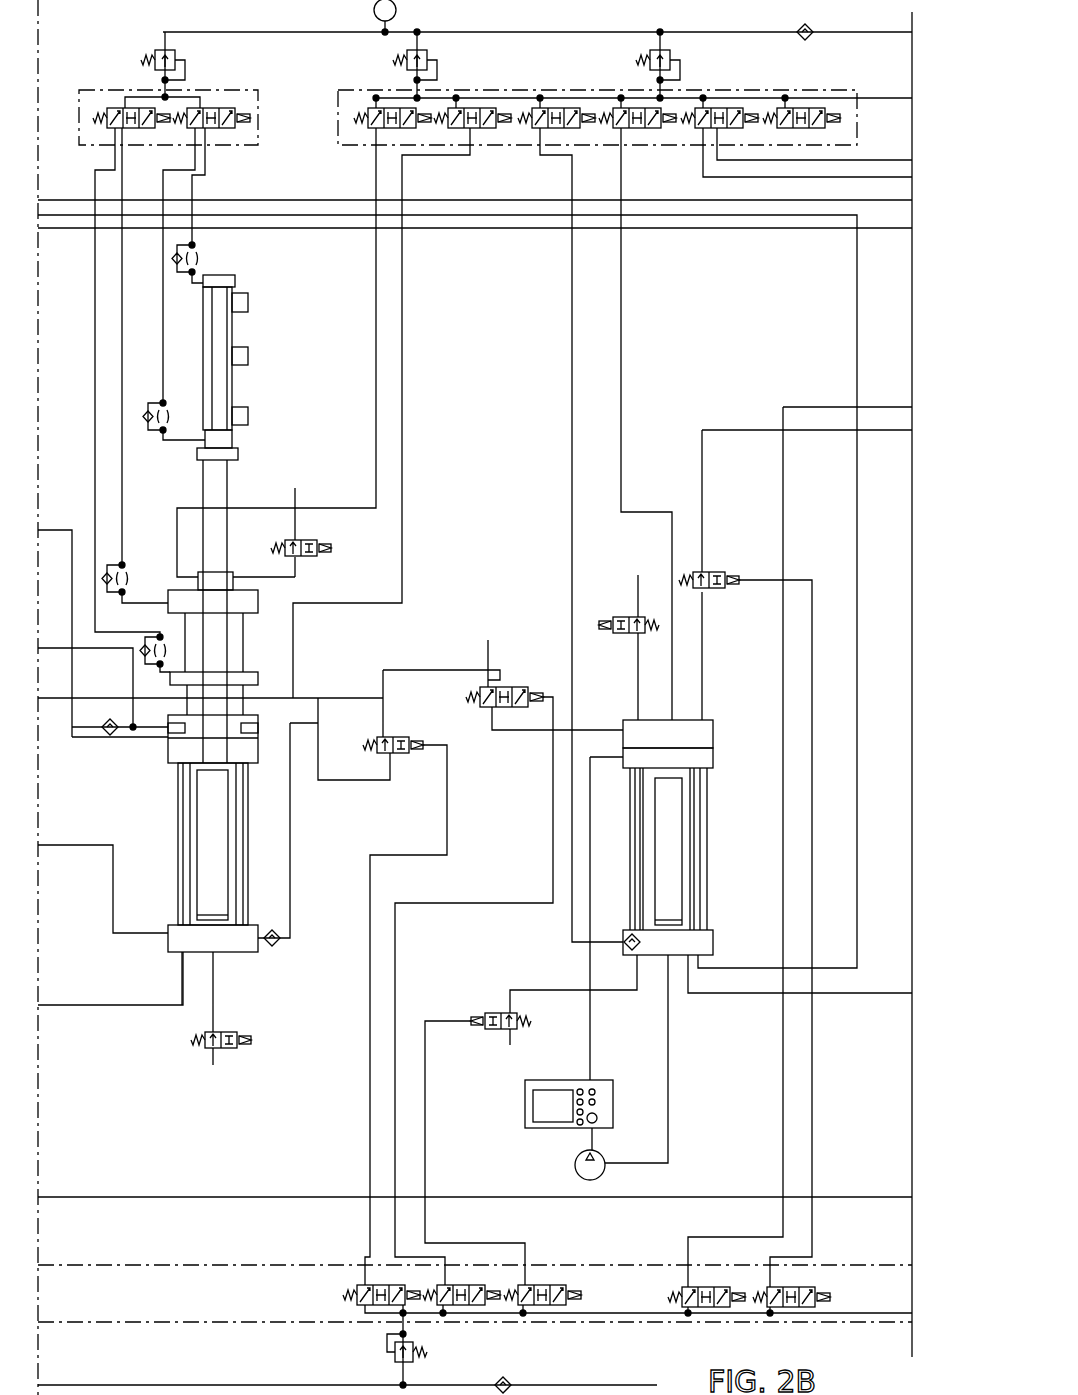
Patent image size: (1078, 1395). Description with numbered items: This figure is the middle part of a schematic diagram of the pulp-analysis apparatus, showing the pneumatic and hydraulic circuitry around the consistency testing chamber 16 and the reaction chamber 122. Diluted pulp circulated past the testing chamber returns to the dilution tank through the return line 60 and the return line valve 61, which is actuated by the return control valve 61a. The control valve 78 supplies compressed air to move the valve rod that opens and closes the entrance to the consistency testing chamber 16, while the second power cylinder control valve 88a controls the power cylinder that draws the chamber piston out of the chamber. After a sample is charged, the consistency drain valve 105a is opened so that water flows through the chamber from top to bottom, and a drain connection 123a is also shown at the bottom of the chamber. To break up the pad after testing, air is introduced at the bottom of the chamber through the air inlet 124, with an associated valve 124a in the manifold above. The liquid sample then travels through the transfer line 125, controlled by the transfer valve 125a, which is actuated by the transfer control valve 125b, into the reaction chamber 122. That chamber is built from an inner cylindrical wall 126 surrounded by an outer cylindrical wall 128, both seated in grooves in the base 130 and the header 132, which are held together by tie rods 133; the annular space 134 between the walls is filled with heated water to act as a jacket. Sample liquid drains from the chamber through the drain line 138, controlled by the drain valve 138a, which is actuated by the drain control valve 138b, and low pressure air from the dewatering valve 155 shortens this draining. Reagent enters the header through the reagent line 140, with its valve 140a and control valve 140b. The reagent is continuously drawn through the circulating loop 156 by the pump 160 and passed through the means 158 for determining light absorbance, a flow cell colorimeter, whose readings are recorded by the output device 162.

The consistency testing chamber 16 is at (170, 799).
The return line 60 is at (318, 698).
The return line valve 61 is at (398, 737).
The return control valve 61a is at (357, 1292).
The control valve 78 is at (113, 108).
The second power cylinder control valve 88a is at (215, 108).
The consistency drain valve 105a is at (240, 1048).
The reaction chamber 122 is at (686, 817).
The conduit 123a is at (113, 940).
The air inlet 124 is at (290, 912).
The valve 124a is at (492, 128).
The transfer line 125 is at (445, 670).
The transfer valve 125a is at (515, 687).
The transfer control valve 125b is at (470, 1305).
The inner cylindrical wall 126 is at (725, 800).
The outer cylindrical wall 128 is at (725, 848).
The base 130 is at (713, 945).
The header 132 is at (713, 725).
The tie rods 133 is at (725, 780).
The annular space 134 is at (725, 827).
The drain line 138 is at (637, 990).
The drain valve 138a is at (500, 1013).
The drain control valve 138b is at (545, 1285).
The reagent line 140 is at (702, 492).
The valve 140a is at (712, 572).
The valve 140b is at (800, 1287).
The dewatering valve 155 is at (650, 128).
The circulating loop 156 is at (668, 1037).
The means for determining light absorbance 158 is at (551, 1082).
The pump 160 is at (575, 1165).
The output device 162 is at (533, 1106).